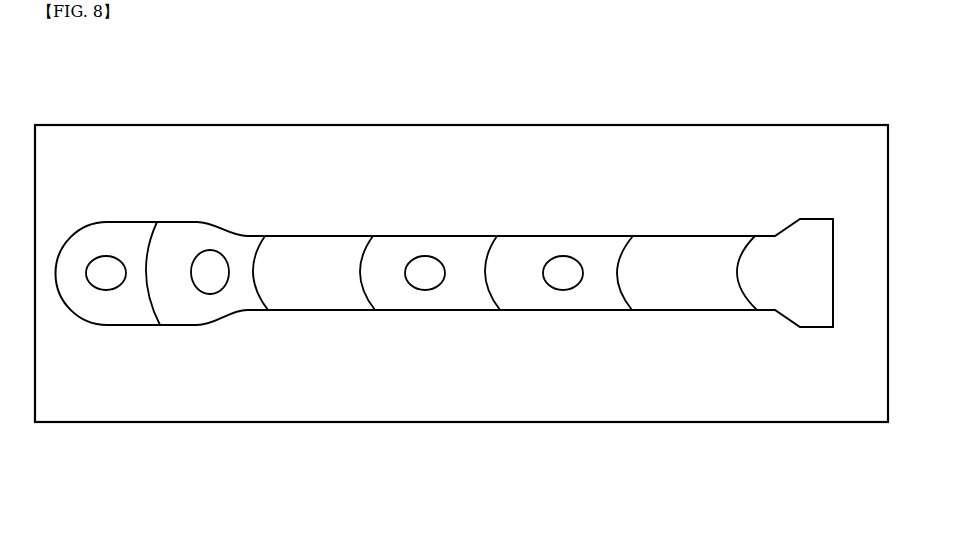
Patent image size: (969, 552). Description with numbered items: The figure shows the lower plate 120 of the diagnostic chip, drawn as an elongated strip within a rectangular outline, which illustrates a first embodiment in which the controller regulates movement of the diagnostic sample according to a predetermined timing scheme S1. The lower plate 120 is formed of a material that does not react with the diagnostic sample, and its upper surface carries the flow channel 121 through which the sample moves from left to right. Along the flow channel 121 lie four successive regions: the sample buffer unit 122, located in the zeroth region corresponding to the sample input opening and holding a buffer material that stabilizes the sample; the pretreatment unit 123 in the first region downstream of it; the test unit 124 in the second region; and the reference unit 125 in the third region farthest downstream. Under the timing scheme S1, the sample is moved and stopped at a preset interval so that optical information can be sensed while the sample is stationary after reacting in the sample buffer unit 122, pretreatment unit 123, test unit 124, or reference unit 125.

The lower plate 120 is at (110, 70).
The flow channel 121 is at (678, 297).
The sample buffer unit 122 is at (108, 283).
The pretreatment unit 123 is at (210, 285).
The test unit 124 is at (425, 283).
The reference unit 125 is at (563, 283).
The predetermined timing scheme S1 is at (490, 258).